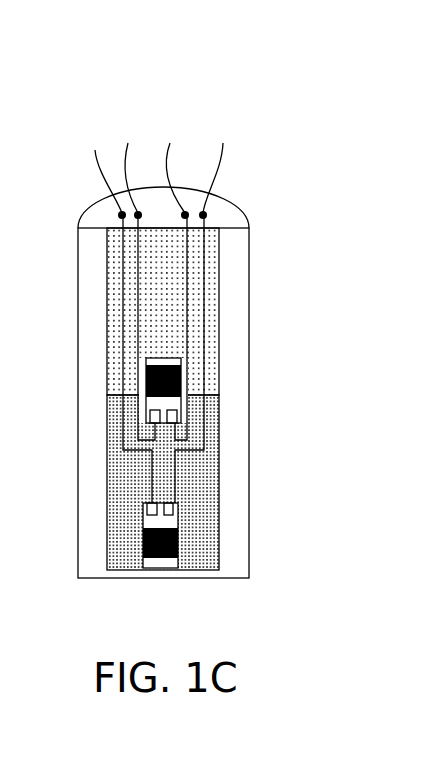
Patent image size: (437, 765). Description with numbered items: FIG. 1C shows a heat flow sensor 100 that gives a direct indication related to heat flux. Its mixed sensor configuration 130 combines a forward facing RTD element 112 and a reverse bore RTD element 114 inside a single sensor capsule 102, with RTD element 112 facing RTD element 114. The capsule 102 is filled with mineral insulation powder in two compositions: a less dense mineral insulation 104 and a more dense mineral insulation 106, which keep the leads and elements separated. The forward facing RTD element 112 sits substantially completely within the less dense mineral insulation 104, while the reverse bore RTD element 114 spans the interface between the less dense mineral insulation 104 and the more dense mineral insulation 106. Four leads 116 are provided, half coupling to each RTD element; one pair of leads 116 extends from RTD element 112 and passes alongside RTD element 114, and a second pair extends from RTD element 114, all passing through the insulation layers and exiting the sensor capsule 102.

The electronic device assembly 100 is at (197, 85).
The sensor capsule 102 is at (78, 322).
The less dense mineral insulation 104 is at (113, 465).
The more dense mineral insulation 106 is at (208, 345).
The forward facing RTD element 112 is at (172, 523).
The reverse bore RTD element 114 is at (180, 363).
The leads 116 is at (125, 275).
The sensor configuration 130 is at (252, 215).